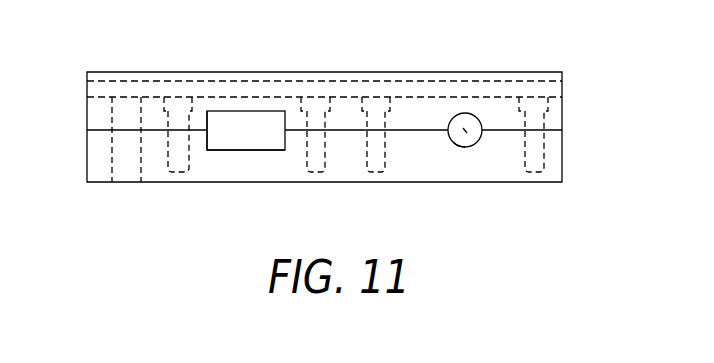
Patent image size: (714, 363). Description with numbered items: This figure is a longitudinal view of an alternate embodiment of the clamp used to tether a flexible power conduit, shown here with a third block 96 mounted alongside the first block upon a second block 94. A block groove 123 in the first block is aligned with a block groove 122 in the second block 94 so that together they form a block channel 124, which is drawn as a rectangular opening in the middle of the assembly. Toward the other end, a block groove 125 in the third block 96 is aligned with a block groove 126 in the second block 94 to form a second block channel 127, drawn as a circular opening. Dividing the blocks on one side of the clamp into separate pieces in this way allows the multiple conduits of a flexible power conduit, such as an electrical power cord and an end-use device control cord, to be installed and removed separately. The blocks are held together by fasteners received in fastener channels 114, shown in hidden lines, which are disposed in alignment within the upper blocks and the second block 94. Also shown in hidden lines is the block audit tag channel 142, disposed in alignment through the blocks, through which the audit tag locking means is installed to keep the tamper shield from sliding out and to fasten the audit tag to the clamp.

The second block 94 is at (87, 160).
The third block 96 is at (87, 100).
The fastener channels 114 is at (178, 157).
The block groove 122 is at (225, 143).
The block groove 123 is at (223, 123).
The block channel 124 is at (257, 123).
The block groove 125 is at (466, 113).
The block groove 126 is at (457, 144).
The block channel 127 is at (465, 132).
The block audit tag channel 142 is at (123, 105).